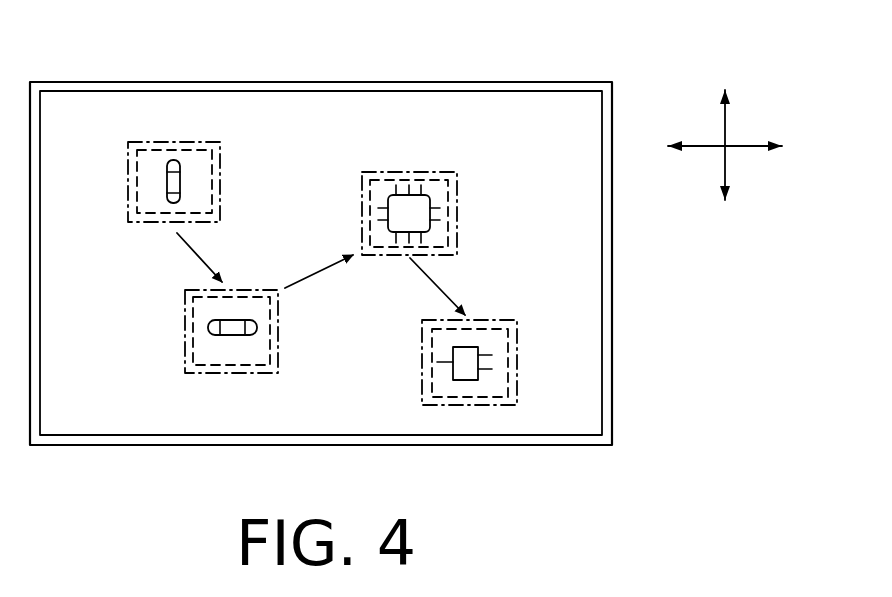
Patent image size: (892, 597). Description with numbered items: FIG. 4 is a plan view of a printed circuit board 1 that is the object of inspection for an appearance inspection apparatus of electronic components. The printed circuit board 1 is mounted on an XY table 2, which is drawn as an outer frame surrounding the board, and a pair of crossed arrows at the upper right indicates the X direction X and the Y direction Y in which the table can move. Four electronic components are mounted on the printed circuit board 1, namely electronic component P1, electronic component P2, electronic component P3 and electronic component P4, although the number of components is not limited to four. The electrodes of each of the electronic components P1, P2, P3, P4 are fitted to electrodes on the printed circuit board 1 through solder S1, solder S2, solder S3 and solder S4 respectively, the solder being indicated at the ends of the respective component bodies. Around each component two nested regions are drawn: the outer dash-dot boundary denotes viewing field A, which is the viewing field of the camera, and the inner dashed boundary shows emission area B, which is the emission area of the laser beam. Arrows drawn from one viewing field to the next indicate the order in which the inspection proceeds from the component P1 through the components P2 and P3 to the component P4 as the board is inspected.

The printed circuit board 1 is at (604, 205).
The XY table 2 is at (612, 287).
The viewing field A is at (143, 140).
The emission area B is at (200, 141).
The solder S1 is at (167, 163).
The electronic component P1 is at (167, 185).
The solder S2 is at (208, 328).
The electronic component P2 is at (237, 336).
The solder S3 is at (385, 207).
The electronic component P3 is at (405, 208).
The solder S4 is at (480, 370).
The electronic component P4 is at (463, 380).
The X direction X is at (742, 142).
The Y direction Y is at (724, 130).